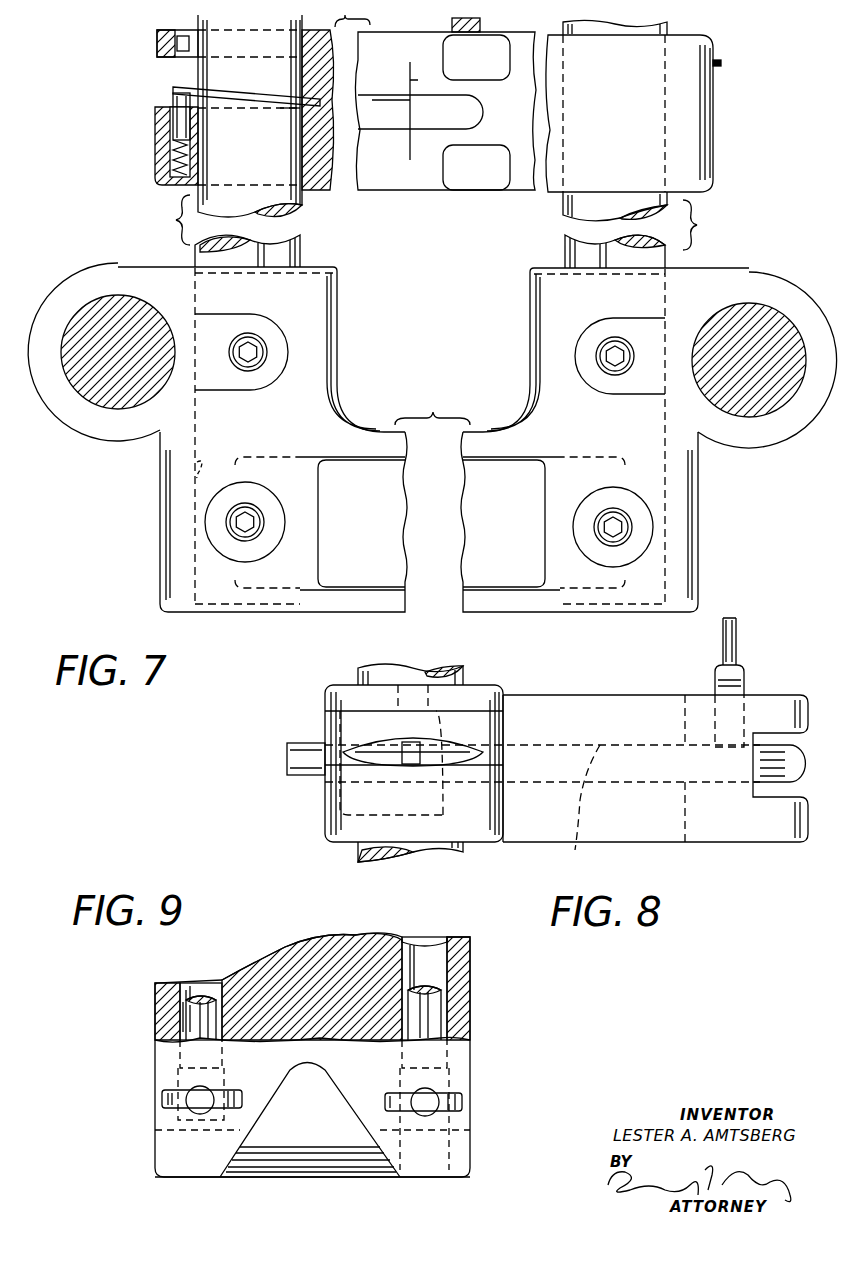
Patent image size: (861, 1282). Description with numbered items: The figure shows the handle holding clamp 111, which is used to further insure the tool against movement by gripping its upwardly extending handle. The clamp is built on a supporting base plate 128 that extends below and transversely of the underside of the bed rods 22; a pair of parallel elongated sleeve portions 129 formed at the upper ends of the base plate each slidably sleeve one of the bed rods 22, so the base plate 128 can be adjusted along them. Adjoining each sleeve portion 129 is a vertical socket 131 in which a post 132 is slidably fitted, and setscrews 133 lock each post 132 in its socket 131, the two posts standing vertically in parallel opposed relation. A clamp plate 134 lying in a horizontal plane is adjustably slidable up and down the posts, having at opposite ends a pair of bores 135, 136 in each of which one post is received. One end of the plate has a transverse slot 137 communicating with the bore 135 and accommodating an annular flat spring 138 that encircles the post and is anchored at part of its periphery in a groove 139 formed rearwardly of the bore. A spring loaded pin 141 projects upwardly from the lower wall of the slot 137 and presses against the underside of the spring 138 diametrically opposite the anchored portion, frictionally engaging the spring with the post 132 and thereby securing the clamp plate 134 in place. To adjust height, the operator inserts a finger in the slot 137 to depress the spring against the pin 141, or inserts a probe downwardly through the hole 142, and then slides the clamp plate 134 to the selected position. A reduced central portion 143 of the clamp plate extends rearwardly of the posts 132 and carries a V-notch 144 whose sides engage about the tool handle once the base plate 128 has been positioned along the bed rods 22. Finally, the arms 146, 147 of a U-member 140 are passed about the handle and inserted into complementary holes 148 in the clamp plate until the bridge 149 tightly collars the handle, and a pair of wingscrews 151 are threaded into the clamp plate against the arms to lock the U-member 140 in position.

In FIG. 7, the bed rods 22 is at (105, 405).
In FIG. 7, the handle holding clamp 111 is at (721, 63).
In FIG. 7, the supporting base plate 128 is at (702, 500).
In FIG. 7, the sleeve portions 129 is at (108, 240).
In FIG. 7, the vertical socket 131 is at (195, 478).
In FIG. 7, the post 132 is at (305, 253).
In FIG. 8, the post 132 is at (365, 862).
In FIG. 7, the setscrews 133 is at (260, 352).
In FIG. 7, the clamp plate 134 is at (445, 112).
In FIG. 8, the clamp plate 134 is at (550, 692).
In FIG. 7, the bore 135 is at (312, 190).
In FIG. 7, the bore 136 is at (665, 103).
In FIG. 7, the transverse slot 137 is at (182, 75).
In FIG. 7, the annular flat spring 138 is at (248, 94).
In FIG. 7, the groove 139 is at (300, 118).
In FIG. 9, the U-member 140 is at (255, 1177).
In FIG. 7, the spring loaded pin 141 is at (172, 97).
In FIG. 7, the hole 142 is at (165, 44).
In FIG. 8, the reduced central portion 143 is at (768, 695).
In FIG. 9, the reduced central portion 143 is at (470, 983).
In FIG. 9, the V-notch 144 is at (345, 1088).
In FIG. 8, the arm 146 is at (295, 755).
In FIG. 9, the arm 146 is at (186, 1015).
In FIG. 8, the arm 147 is at (570, 845).
In FIG. 9, the arm 147 is at (450, 1018).
In FIG. 8, the holes 148 is at (413, 752).
In FIG. 9, the holes 148 is at (198, 990).
In FIG. 7, the bridge 149 is at (372, 100).
In FIG. 8, the bridge 149 is at (798, 780).
In FIG. 9, the bridge 149 is at (308, 1175).
In FIG. 8, the wingscrews 151 is at (730, 640).
In FIG. 9, the wingscrews 151 is at (162, 1100).